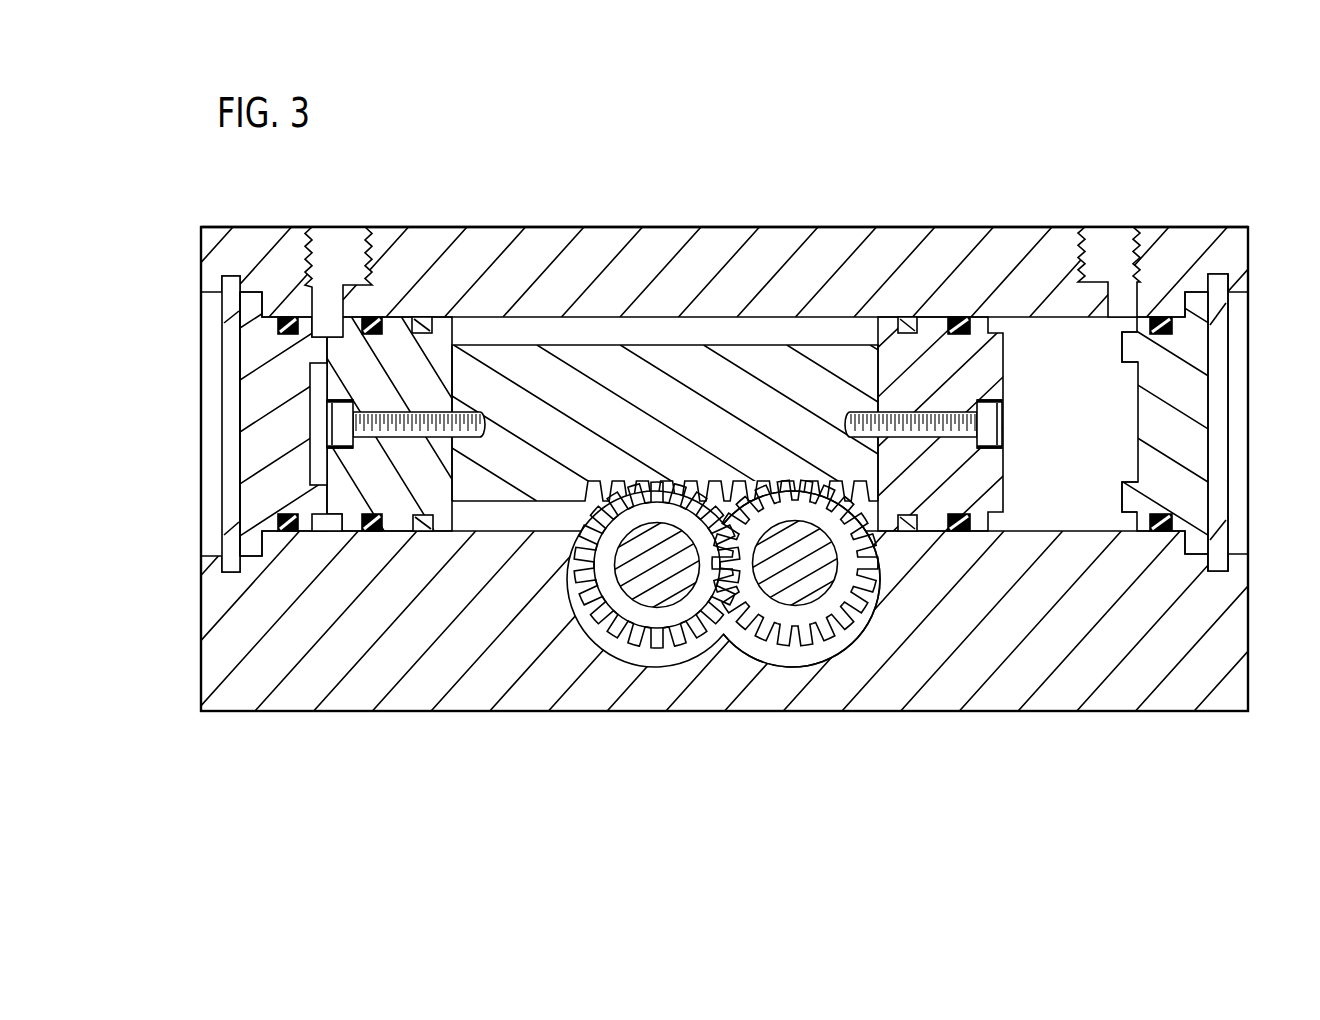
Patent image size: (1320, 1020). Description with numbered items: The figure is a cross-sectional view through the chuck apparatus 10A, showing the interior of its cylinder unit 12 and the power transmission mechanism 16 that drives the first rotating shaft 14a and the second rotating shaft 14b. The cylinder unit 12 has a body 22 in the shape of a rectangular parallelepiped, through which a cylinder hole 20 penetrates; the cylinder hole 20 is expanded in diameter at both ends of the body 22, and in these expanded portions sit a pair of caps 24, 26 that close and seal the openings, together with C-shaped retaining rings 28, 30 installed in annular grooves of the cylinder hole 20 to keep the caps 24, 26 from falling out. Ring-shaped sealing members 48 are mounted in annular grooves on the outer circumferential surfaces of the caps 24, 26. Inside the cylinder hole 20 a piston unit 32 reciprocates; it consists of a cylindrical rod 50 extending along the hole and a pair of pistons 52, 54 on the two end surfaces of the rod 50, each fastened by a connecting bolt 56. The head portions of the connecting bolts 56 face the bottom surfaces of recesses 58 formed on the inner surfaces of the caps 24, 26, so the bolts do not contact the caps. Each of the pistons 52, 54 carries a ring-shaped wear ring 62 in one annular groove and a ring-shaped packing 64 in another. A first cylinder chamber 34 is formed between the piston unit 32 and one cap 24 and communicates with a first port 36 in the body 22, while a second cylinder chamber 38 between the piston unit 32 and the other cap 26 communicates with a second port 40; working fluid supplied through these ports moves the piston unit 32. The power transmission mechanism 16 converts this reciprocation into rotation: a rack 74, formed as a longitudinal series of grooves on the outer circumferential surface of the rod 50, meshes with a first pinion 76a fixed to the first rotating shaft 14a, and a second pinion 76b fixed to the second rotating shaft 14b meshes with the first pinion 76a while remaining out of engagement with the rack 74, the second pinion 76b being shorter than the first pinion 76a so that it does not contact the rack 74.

The chuck apparatus 10A is at (570, 166).
The cylinder unit 12 is at (1186, 222).
The first rotating shaft 14a is at (786, 598).
The second rotating shaft 14b is at (652, 598).
The power transmission mechanism 16 is at (683, 648).
The cylinder hole 20 is at (1233, 380).
The body 22 is at (1153, 673).
The cap 24 is at (1190, 478).
The cap 26 is at (258, 482).
The retaining ring 28 is at (1218, 548).
The retaining ring 30 is at (240, 548).
The piston unit 32 is at (318, 471).
The first cylinder chamber 34 is at (1043, 512).
The first port 36 is at (1110, 238).
The second cylinder chamber 38 is at (330, 533).
The second port 40 is at (332, 237).
The sealing member 48 is at (286, 533).
The rod 50 is at (670, 362).
The piston 52 is at (932, 345).
The piston 54 is at (397, 345).
The connecting bolt 56 is at (337, 428).
The recess 58 is at (322, 393).
The wear ring 62 is at (425, 533).
The packing 64 is at (372, 533).
The rack 74 is at (582, 492).
The first pinion 76a is at (851, 622).
The second pinion 76b is at (594, 617).